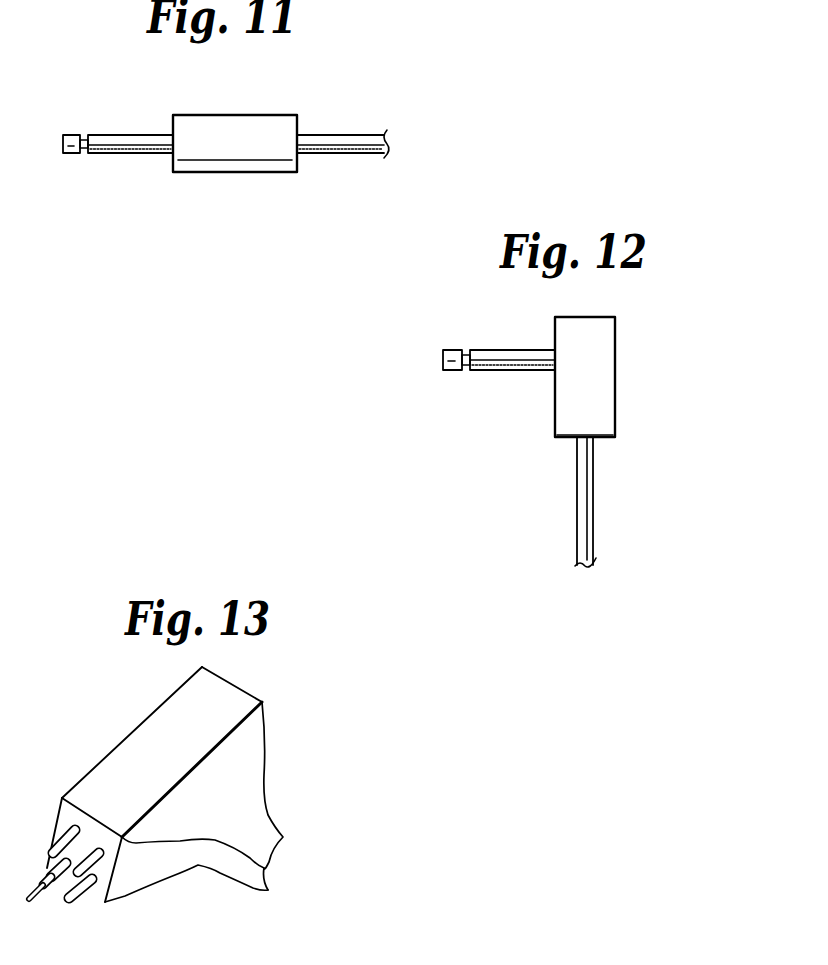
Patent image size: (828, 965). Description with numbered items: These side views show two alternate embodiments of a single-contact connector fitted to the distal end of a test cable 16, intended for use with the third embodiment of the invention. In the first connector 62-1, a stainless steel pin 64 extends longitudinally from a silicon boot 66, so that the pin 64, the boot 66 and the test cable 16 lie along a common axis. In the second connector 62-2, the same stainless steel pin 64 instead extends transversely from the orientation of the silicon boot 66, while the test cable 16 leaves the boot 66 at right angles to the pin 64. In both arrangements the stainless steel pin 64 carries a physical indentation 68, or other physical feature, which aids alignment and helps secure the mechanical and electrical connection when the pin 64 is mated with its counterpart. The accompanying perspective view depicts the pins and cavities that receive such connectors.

In FIG. 11, the sensor module (first embodiment) 62-1 is at (229, 100).
In FIG. 12, the sensor module (second embodiment) 62-2 is at (624, 310).
In FIG. 11, the tubular connector sleeve 64 is at (108, 131).
In FIG. 12, the tubular connector sleeve 64 is at (508, 352).
In FIG. 11, the module housing 66 is at (220, 165).
In FIG. 12, the module housing 66 is at (612, 373).
In FIG. 11, the end connector 68 is at (84, 154).
In FIG. 12, the end connector 68 is at (467, 373).
In FIG. 11, the cable 16 is at (338, 122).
In FIG. 12, the cable 16 is at (594, 500).